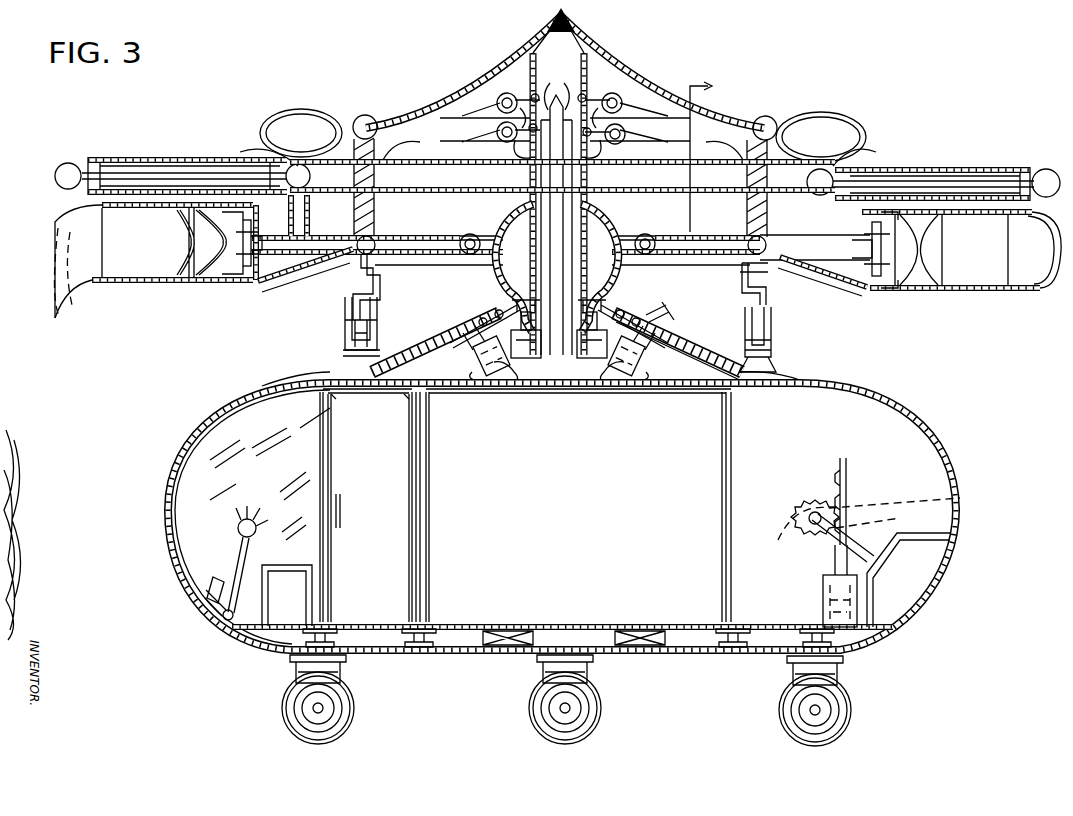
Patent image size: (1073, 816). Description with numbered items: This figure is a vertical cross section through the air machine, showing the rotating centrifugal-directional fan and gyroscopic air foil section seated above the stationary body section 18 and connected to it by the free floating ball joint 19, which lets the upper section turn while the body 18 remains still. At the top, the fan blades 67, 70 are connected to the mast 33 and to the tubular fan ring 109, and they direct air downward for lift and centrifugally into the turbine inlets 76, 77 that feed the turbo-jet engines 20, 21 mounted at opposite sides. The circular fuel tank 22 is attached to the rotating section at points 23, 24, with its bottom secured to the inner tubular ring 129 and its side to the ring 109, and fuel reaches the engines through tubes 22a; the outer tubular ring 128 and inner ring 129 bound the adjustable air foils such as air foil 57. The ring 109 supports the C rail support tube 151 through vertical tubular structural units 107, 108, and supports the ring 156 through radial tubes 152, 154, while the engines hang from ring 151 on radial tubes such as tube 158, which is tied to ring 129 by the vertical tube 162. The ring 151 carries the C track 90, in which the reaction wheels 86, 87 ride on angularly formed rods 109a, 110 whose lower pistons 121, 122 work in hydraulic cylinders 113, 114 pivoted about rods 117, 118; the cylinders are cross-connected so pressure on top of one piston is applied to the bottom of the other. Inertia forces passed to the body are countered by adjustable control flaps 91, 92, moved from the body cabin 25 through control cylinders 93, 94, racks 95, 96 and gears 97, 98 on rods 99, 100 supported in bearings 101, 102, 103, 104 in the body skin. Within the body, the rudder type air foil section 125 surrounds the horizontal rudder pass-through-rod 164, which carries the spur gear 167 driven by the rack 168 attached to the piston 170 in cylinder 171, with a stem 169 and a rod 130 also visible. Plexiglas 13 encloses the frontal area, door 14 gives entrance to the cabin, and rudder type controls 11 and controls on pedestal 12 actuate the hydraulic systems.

The rudder type controls 11 is at (206, 594).
The pedestal 12 is at (236, 529).
The Plexiglas 13 is at (166, 489).
The door 14 is at (330, 587).
The body section 18 is at (154, 478).
The free floating ball joint 19 is at (618, 216).
The turbo-jet engine 20 is at (148, 262).
The turbo-jet engine 21 is at (988, 270).
The circular fuel tank 22 is at (272, 108).
The tubes 22a is at (283, 150).
The attachment point 23 is at (361, 114).
The attachment point 24 is at (292, 168).
The body cabin 25 is at (215, 462).
The mast 33 is at (616, 80).
The adjustable air foil 57 is at (116, 158).
The fan blade 67 is at (592, 74).
The fan blade 70 is at (400, 118).
The turbine inlet 76 is at (272, 262).
The turbine inlet 77 is at (866, 292).
The reaction wheel 86 is at (340, 275).
The reaction wheel 87 is at (832, 296).
The C track 90 is at (355, 268).
The adjustable control flap 91 is at (386, 393).
The adjustable control flap 92 is at (680, 321).
The control cylinder 93 is at (478, 366).
The control cylinder 94 is at (646, 362).
The rack 95 is at (452, 347).
The rack 96 is at (670, 358).
The gear 97 is at (468, 315).
The gear 98 is at (639, 314).
The rod 99 is at (379, 352).
The rod 100 is at (657, 313).
The bearing 101 is at (716, 385).
The bearing 102 is at (583, 350).
The bearing 103 is at (538, 350).
The bearing 104 is at (378, 300).
The tubular structural unit 107 is at (376, 220).
The tubular structural unit 108 is at (656, 237).
The tubular fan ring 109 is at (366, 116).
The angularly formed rod 109a is at (350, 300).
The angularly formed rod 110 is at (766, 300).
The hydraulic cylinder 113 is at (343, 354).
The hydraulic cylinder 114 is at (776, 320).
The rod 117 is at (322, 376).
The rod 118 is at (774, 352).
The piston 121 is at (345, 338).
The piston 122 is at (773, 334).
The rudder type air foil section 125 is at (962, 498).
The outer tubular ring 128 is at (63, 163).
The inner tubular ring 129 is at (319, 210).
The pipe rod 130 is at (180, 160).
The C rail support tube 151 is at (356, 255).
The radial tube 152 is at (420, 235).
The radial tube 154 is at (652, 240).
The ring 156 is at (471, 232).
The radial tube 158 is at (311, 243).
The vertical tube 162 is at (292, 226).
The horizontal rudder pass-through-rod 164 is at (806, 522).
The spur gear 167 is at (803, 499).
The rack 168 is at (848, 472).
The stem 169 is at (833, 559).
The piston 170 is at (828, 611).
The cylinder 171 is at (824, 583).